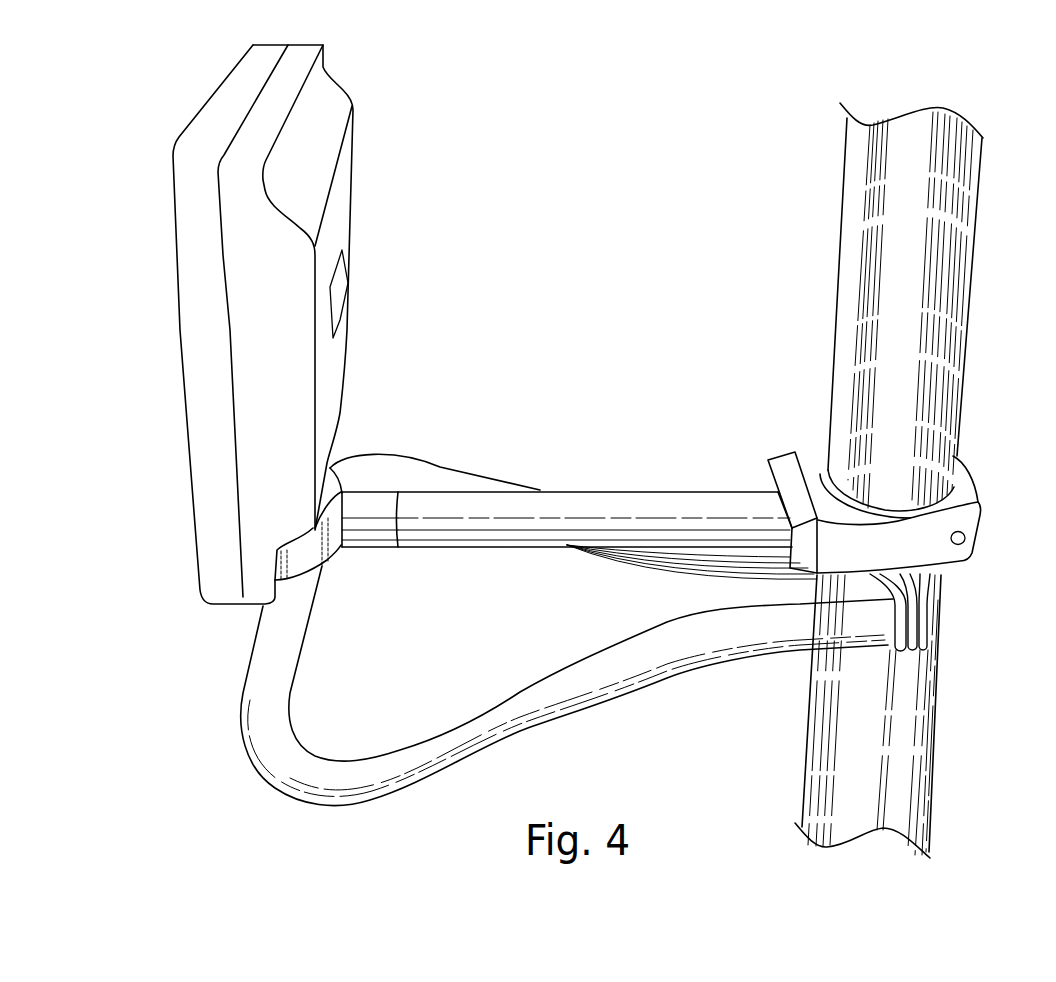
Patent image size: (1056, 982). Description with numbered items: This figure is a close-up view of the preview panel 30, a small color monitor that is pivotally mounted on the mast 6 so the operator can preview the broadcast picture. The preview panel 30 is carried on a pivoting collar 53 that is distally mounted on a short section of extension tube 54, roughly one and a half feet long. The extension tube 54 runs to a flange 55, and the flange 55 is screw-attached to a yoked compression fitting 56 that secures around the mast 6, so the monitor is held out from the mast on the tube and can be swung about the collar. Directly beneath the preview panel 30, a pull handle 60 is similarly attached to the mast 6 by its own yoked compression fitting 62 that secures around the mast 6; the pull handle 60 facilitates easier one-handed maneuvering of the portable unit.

The mast 6 is at (963, 347).
The preview panel 30 is at (353, 187).
The pivoting collar 53 is at (382, 490).
The extension tube 54 is at (560, 490).
The flange 55 is at (785, 458).
The yoked compression fitting 56 is at (980, 527).
The pull handle 60 is at (623, 703).
The yoked compression fitting 62 is at (933, 625).